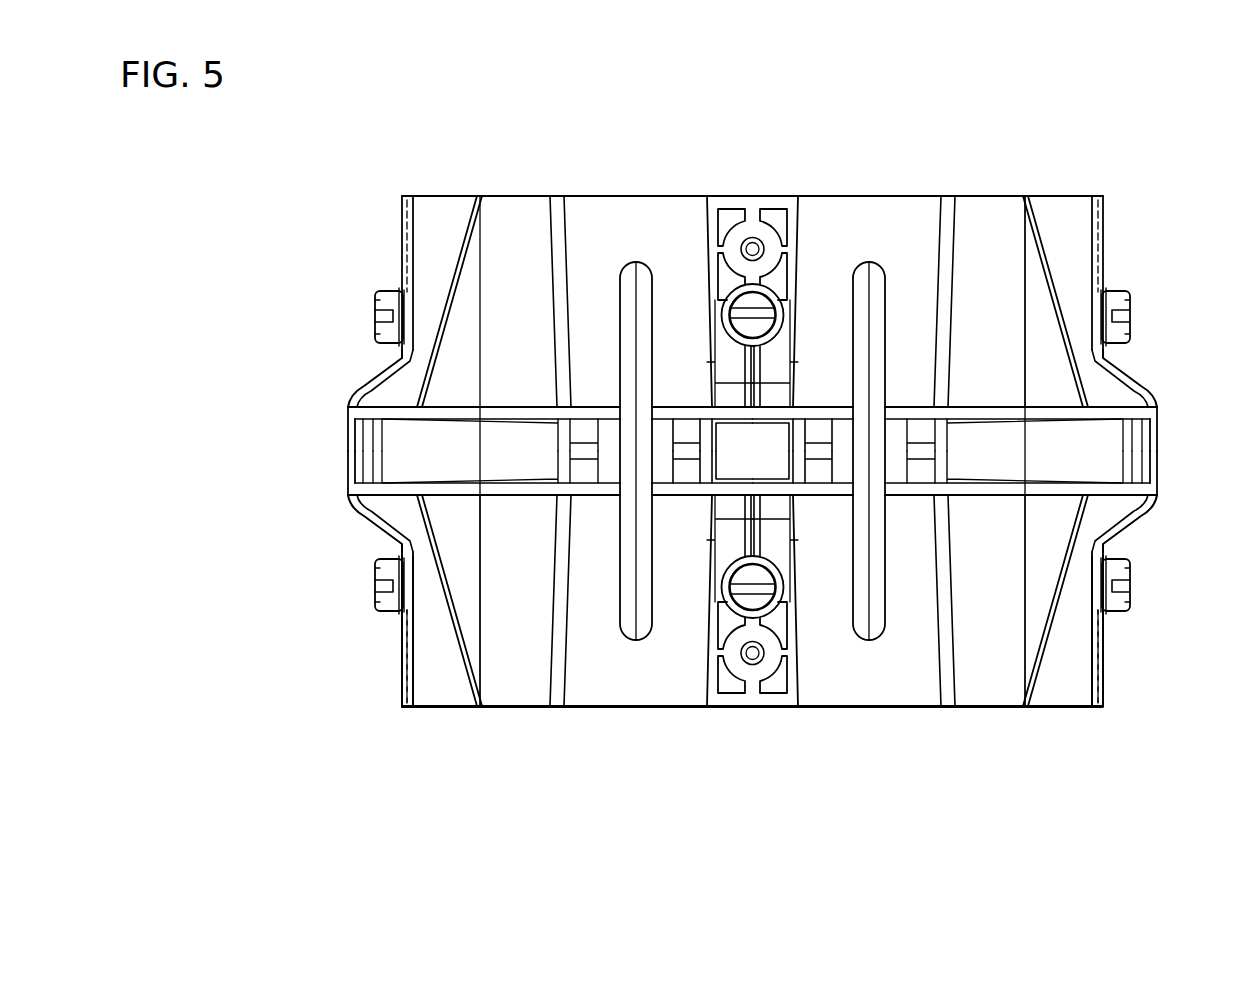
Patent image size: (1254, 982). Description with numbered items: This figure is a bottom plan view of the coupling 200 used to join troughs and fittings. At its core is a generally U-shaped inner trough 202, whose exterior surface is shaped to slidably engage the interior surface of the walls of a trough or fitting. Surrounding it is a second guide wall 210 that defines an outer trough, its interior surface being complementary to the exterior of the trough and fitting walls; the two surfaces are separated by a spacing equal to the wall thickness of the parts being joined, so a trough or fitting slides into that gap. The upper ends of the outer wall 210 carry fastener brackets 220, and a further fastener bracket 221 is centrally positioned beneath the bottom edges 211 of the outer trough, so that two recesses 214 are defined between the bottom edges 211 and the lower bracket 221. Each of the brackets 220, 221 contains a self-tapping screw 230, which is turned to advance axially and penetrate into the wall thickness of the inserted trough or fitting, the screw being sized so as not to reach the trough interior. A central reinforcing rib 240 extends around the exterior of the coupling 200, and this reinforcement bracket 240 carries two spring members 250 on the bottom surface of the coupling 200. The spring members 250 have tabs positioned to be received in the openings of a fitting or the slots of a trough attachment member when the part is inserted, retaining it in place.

The coupling 200 is at (862, 150).
The inner trough 202 is at (642, 218).
The second guide wall 210 is at (515, 222).
The bottom edges 211 is at (562, 196).
The recesses 214 is at (662, 688).
The fastener brackets 220 is at (442, 690).
The fastener bracket 221 is at (753, 697).
The self-tapping screw 230 is at (375, 303).
The central reinforcing rib 240 is at (505, 413).
The spring members 250 is at (630, 588).